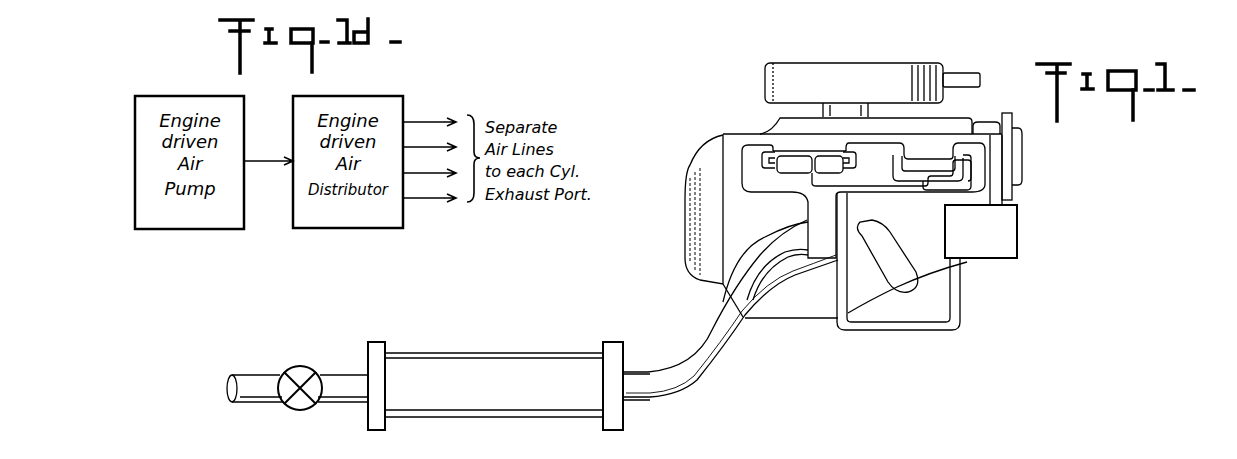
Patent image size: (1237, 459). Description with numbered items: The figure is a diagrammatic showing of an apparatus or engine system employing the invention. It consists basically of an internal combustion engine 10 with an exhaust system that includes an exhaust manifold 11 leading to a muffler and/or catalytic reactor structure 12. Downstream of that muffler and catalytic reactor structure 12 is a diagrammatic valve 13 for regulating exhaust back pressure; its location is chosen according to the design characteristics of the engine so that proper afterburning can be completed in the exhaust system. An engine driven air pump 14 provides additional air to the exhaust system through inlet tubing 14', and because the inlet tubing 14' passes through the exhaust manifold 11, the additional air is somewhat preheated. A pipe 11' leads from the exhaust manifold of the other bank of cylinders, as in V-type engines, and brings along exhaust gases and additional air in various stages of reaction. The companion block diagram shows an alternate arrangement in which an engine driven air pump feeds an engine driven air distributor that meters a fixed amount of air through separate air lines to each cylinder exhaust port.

The internal combustion engine 10 is at (934, 153).
The exhaust manifold 11 is at (905, 200).
The pipe 11' is at (891, 253).
The muffler and/or catalytic reactor structure 12 is at (490, 357).
The valve 13 is at (303, 364).
The engine driven air pump 14 is at (1001, 196).
The inlet tubing 14' is at (908, 258).